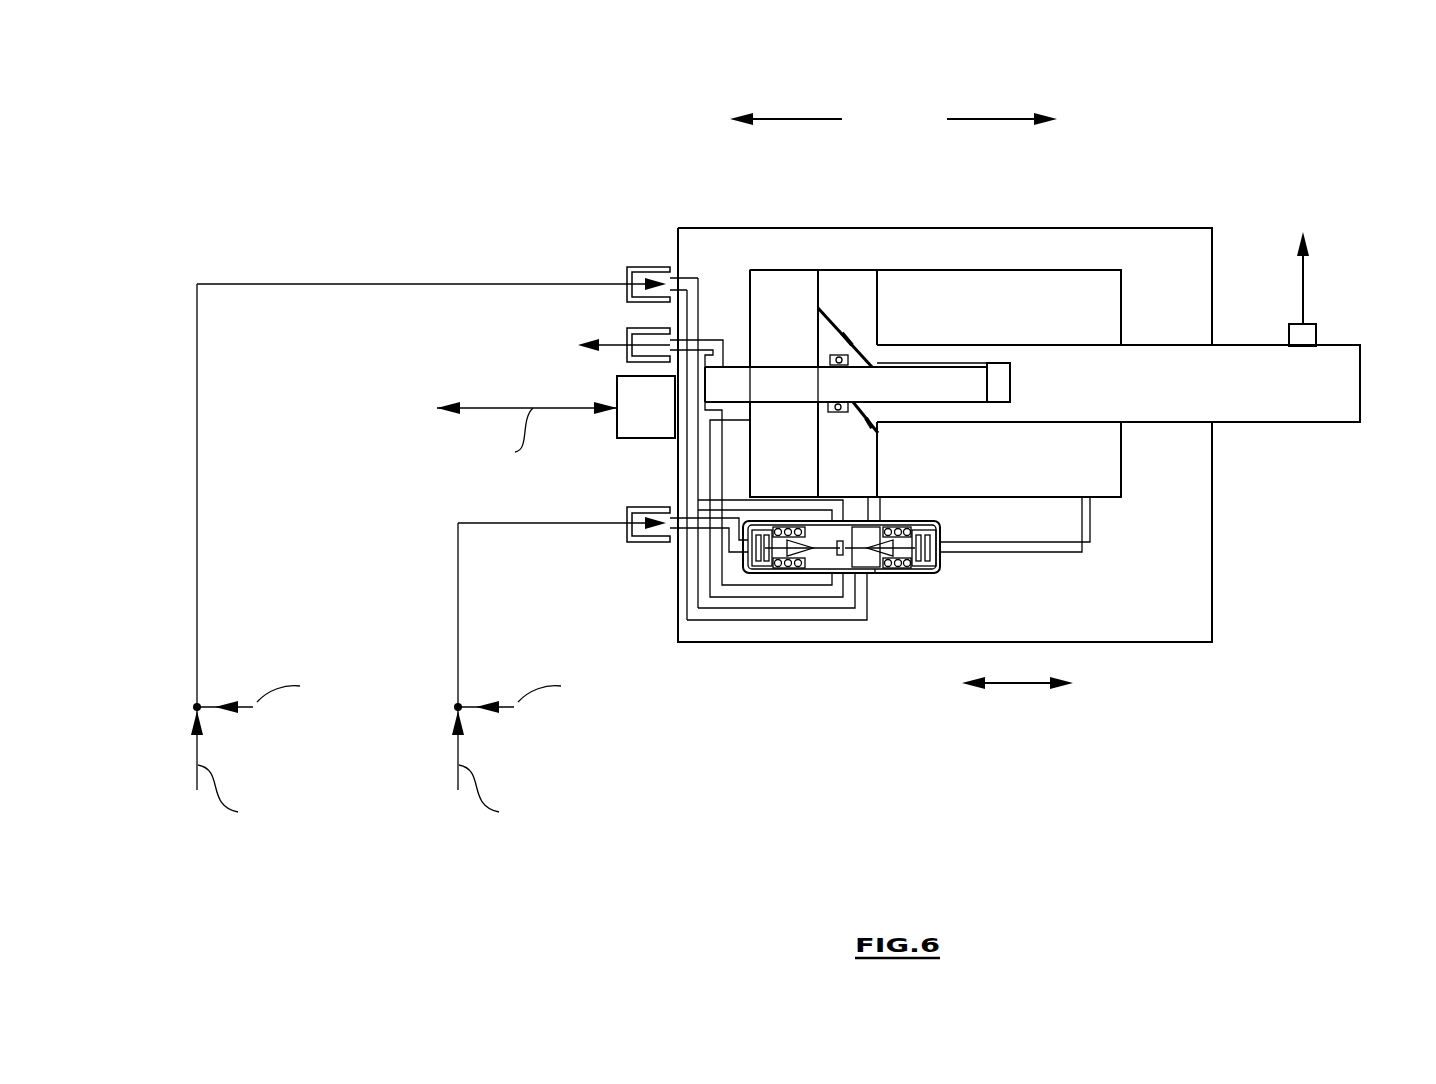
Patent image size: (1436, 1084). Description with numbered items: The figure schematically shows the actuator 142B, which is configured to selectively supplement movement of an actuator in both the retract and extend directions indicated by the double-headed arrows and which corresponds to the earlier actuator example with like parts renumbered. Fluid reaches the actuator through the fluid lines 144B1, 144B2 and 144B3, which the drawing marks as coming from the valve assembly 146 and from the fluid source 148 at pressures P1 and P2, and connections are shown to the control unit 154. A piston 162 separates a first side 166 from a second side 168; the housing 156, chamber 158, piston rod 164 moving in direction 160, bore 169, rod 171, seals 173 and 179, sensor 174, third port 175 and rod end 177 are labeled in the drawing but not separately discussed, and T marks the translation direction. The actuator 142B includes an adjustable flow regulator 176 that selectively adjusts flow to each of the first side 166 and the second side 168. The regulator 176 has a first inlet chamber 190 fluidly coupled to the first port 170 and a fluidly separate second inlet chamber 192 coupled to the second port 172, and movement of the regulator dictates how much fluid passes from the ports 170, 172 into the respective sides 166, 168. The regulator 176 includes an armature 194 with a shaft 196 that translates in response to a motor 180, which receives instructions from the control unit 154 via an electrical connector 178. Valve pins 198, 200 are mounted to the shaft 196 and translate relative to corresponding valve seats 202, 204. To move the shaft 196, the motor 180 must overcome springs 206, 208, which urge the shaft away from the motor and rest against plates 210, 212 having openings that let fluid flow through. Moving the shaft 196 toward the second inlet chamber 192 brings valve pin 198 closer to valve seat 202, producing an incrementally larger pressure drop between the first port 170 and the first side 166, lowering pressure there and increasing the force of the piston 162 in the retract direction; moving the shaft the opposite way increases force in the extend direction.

The actuator 142B is at (616, 156).
The first fluid line 144B1 is at (533, 284).
The second fluid line 144B2 is at (520, 523).
The third fluid line 144B3 is at (614, 345).
The valve assembly 146 is at (403, 829).
The fluid source 148 is at (417, 704).
The control unit 154 is at (1302, 236).
The actuator housing 156 is at (1075, 228).
The cylinder chamber 158 is at (1110, 276).
The rod extension direction 160 is at (1268, 438).
The piston 162 is at (850, 300).
The piston rod 164 is at (1344, 406).
The first side 166 is at (790, 310).
The second side 168 is at (1100, 327).
The rod bore 169 is at (955, 380).
The first port 170 is at (652, 267).
The inner rod 171 is at (870, 343).
The second port 172 is at (652, 542).
The second seal 173 is at (875, 455).
The position sensor 174 is at (1316, 335).
The third port fitting 175 is at (637, 362).
The adjustable flow regulator 176 is at (936, 595).
The rod end stop 177 is at (1010, 382).
The electrical connector 178 is at (650, 438).
The first seal 179 is at (840, 352).
The motor 180 is at (842, 573).
The first inlet chamber 190 is at (832, 503).
The second inlet chamber 192 is at (865, 530).
The armature 194 is at (860, 575).
The shaft 196 is at (930, 570).
The valve pin 198 is at (792, 573).
The valve pin 200 is at (897, 570).
The valve seat 202 is at (817, 573).
The valve seat 204 is at (875, 573).
The spring 206 is at (790, 532).
The spring 208 is at (905, 525).
The plate 210 is at (757, 573).
The plate 212 is at (940, 530).
The first pressure P1 is at (198, 707).
The second pressure P2 is at (459, 707).
The translation direction T is at (1020, 683).